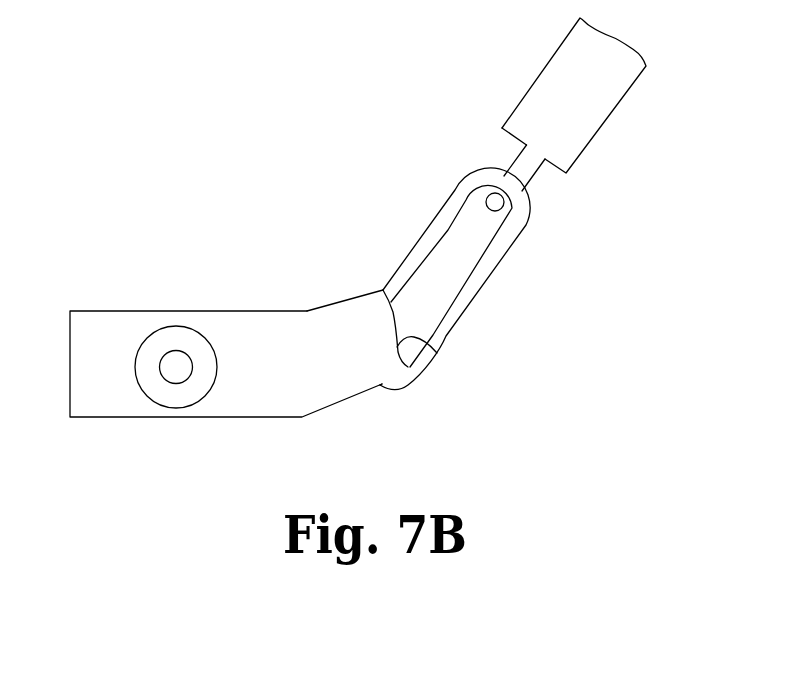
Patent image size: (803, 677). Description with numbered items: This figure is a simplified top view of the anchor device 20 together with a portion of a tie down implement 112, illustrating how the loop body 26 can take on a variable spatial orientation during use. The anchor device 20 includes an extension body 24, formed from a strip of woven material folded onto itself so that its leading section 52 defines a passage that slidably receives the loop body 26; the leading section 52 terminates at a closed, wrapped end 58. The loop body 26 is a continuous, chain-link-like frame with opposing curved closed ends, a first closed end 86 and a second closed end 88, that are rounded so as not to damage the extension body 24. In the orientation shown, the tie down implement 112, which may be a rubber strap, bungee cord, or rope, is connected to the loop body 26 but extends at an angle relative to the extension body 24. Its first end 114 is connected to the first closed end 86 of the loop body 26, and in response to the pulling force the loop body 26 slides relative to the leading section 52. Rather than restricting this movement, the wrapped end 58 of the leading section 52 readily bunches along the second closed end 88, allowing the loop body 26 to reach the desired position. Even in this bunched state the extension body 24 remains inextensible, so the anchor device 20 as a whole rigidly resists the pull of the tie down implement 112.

The anchor device 20 is at (160, 290).
The extension body 24 is at (307, 309).
The loop body 26 is at (506, 296).
The leading section 52 is at (338, 297).
The wrapped end 58 is at (437, 353).
The first closed end 86 is at (492, 173).
The second closed end 88 is at (382, 384).
The tie down implement 112 is at (583, 111).
The first end 114 is at (538, 170).